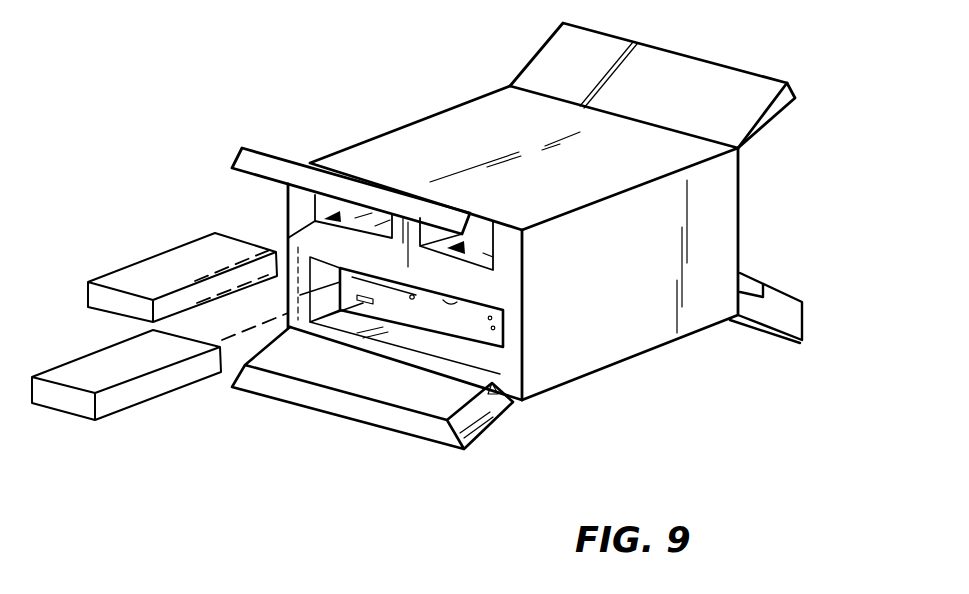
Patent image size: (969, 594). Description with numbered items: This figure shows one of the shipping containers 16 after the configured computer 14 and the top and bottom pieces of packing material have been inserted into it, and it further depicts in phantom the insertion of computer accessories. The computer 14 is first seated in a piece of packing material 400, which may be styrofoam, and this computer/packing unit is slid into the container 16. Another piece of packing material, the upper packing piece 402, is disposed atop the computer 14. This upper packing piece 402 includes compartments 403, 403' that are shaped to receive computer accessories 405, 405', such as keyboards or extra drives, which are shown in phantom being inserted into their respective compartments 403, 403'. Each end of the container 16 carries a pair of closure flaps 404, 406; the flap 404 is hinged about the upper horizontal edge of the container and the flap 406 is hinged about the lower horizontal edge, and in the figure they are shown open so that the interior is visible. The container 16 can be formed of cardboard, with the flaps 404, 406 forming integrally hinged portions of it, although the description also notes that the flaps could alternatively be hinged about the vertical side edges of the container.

The computer 14 is at (446, 330).
The shipping container 16 is at (748, 220).
The piece of packing material 400 is at (512, 408).
The upper packing piece 402 is at (507, 288).
The compartment 403 is at (351, 174).
The compartment 403' is at (564, 301).
The closure flap 404 is at (700, 60).
The computer accessory 405 is at (168, 263).
The computer accessory 405' is at (160, 392).
The closure flap 406 is at (802, 322).